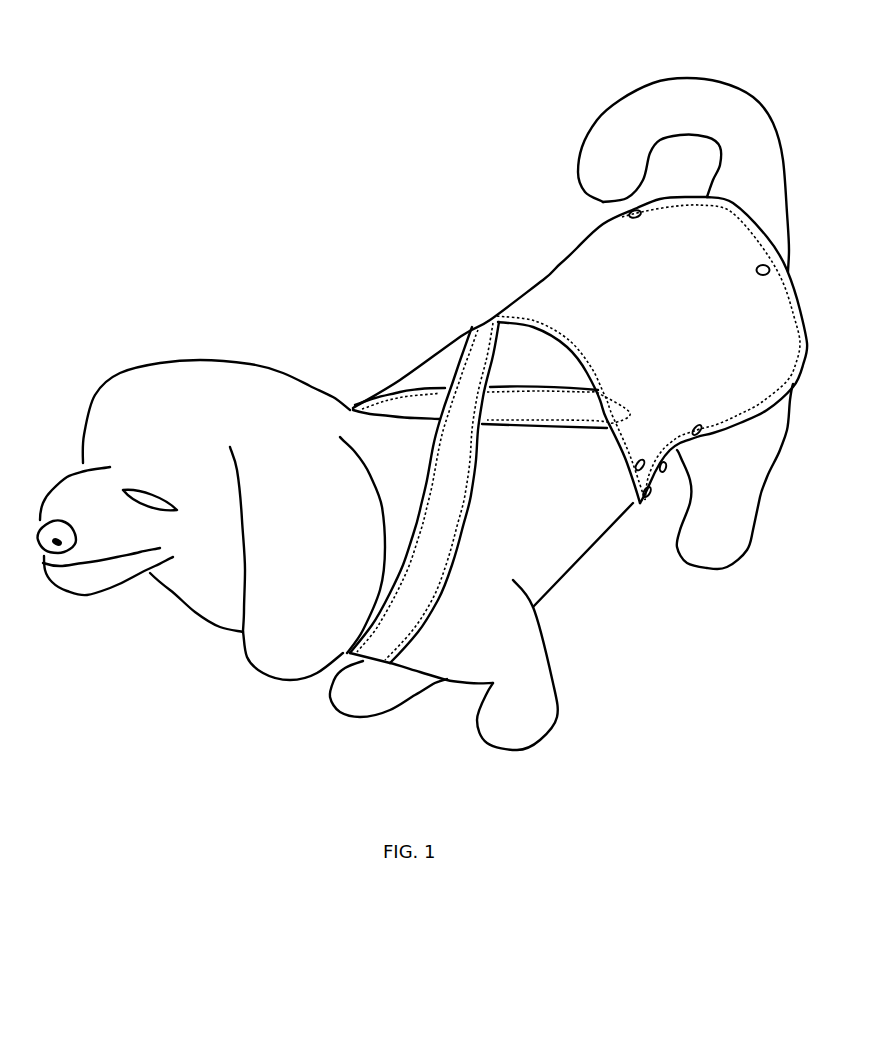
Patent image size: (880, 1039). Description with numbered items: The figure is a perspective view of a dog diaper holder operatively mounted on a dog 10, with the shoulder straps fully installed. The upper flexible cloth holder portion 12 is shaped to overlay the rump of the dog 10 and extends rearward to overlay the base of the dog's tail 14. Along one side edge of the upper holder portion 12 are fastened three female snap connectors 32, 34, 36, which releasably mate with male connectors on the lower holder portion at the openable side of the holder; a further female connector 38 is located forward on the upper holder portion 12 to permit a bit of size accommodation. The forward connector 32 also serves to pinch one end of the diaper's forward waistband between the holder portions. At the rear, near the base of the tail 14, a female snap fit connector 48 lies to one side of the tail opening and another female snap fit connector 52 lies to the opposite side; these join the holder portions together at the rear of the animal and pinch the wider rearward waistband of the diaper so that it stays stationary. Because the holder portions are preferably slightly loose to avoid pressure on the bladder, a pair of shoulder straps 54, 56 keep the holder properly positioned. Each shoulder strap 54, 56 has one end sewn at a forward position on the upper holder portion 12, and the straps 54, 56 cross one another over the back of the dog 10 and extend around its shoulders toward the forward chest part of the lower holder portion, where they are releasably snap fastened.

The dog 10 is at (205, 284).
The upper flexible cloth holder portion 12 is at (570, 297).
The dog's tail 14 is at (608, 108).
The female connector 32 is at (646, 510).
The female connector 34 is at (668, 472).
The female connector 36 is at (703, 437).
The female connector 38 is at (637, 472).
The female snap fit connector 48 is at (760, 277).
The female snap fit connector 52 is at (638, 218).
The shoulder strap 54 is at (472, 327).
The shoulder strap 56 is at (405, 410).